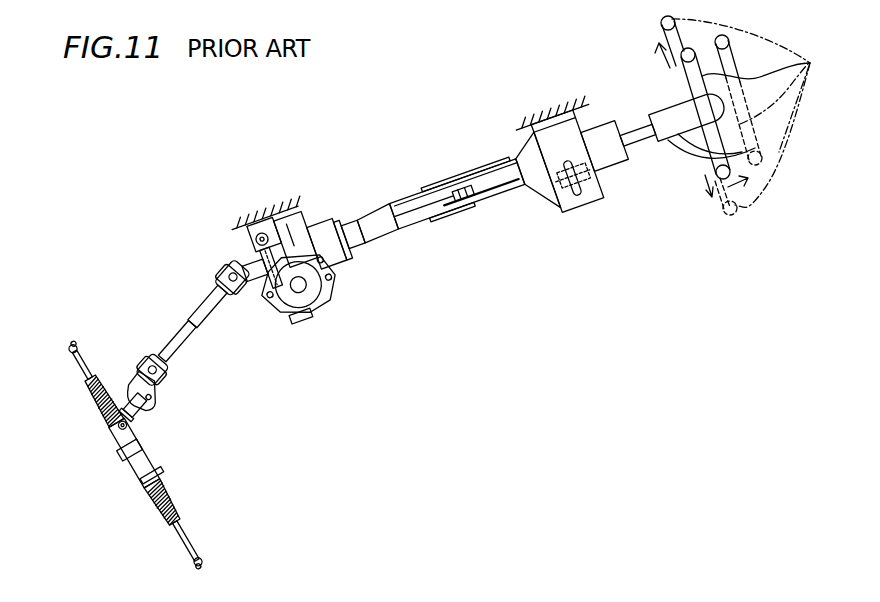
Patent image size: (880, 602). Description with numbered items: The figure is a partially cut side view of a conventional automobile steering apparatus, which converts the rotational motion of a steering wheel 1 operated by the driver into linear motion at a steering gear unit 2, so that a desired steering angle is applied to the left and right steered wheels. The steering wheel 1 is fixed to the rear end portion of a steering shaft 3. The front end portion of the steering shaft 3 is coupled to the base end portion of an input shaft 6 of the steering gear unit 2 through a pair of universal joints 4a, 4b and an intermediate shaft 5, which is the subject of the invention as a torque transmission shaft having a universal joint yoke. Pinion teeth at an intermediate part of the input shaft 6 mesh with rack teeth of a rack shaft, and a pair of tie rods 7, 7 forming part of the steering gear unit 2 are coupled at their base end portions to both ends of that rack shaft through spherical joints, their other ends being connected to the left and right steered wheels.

The steering wheel 1 is at (805, 63).
The steering gear unit 2 is at (118, 436).
The steering shaft 3 is at (637, 140).
The universal joint 4a is at (228, 297).
The universal joint 4b is at (153, 399).
The intermediate shaft 5 is at (177, 340).
The input shaft 6 is at (130, 400).
The tie rod 7 is at (70, 356).